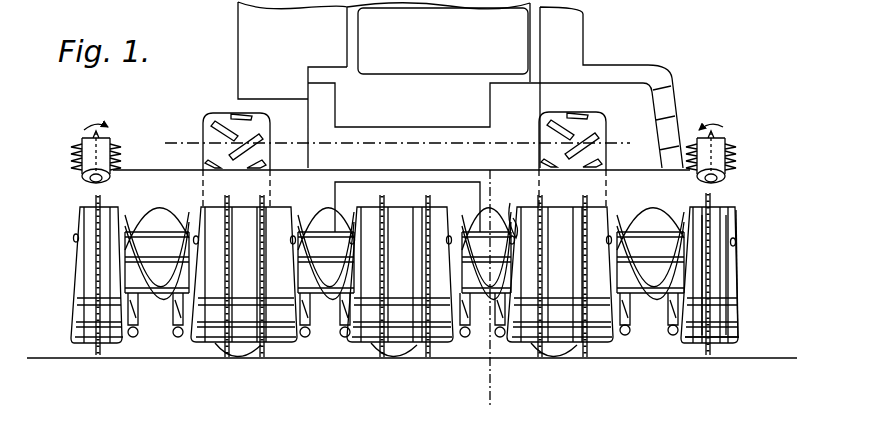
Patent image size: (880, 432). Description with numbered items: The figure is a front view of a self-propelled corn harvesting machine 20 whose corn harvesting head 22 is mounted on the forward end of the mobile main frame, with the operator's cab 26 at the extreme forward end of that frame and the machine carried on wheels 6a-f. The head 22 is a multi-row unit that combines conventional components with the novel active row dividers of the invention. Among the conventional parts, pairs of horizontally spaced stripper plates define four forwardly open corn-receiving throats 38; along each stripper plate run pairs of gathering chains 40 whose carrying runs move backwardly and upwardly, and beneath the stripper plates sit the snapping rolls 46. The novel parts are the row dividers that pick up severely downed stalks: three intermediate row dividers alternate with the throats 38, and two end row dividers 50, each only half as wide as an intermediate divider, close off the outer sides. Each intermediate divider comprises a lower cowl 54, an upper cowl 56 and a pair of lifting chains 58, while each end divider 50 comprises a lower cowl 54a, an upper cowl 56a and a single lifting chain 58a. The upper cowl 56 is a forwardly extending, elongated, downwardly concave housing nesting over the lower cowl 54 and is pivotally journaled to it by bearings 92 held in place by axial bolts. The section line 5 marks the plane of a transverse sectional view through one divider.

The self-propelled corn harvesting machine 20 is at (636, 40).
The operator's cab 26 is at (393, 46).
The tractor wheels 6a-f is at (180, 164).
The section line 5- 5 is at (507, 176).
The corn harvesting head 22 is at (740, 290).
The corn-receiving throats 38 is at (157, 350).
The gathering chains 40 is at (138, 306).
The snapping rolls 46 is at (133, 338).
The end row dividers 50 is at (727, 346).
The lower cowl 54 is at (575, 205).
The lower cowl 54a is at (85, 273).
The upper cowl 56 is at (259, 261).
The upper cowl 56a is at (722, 248).
The lifting chains 58 is at (584, 354).
The lifting chain 58a is at (97, 193).
The bearings 92 is at (517, 210).